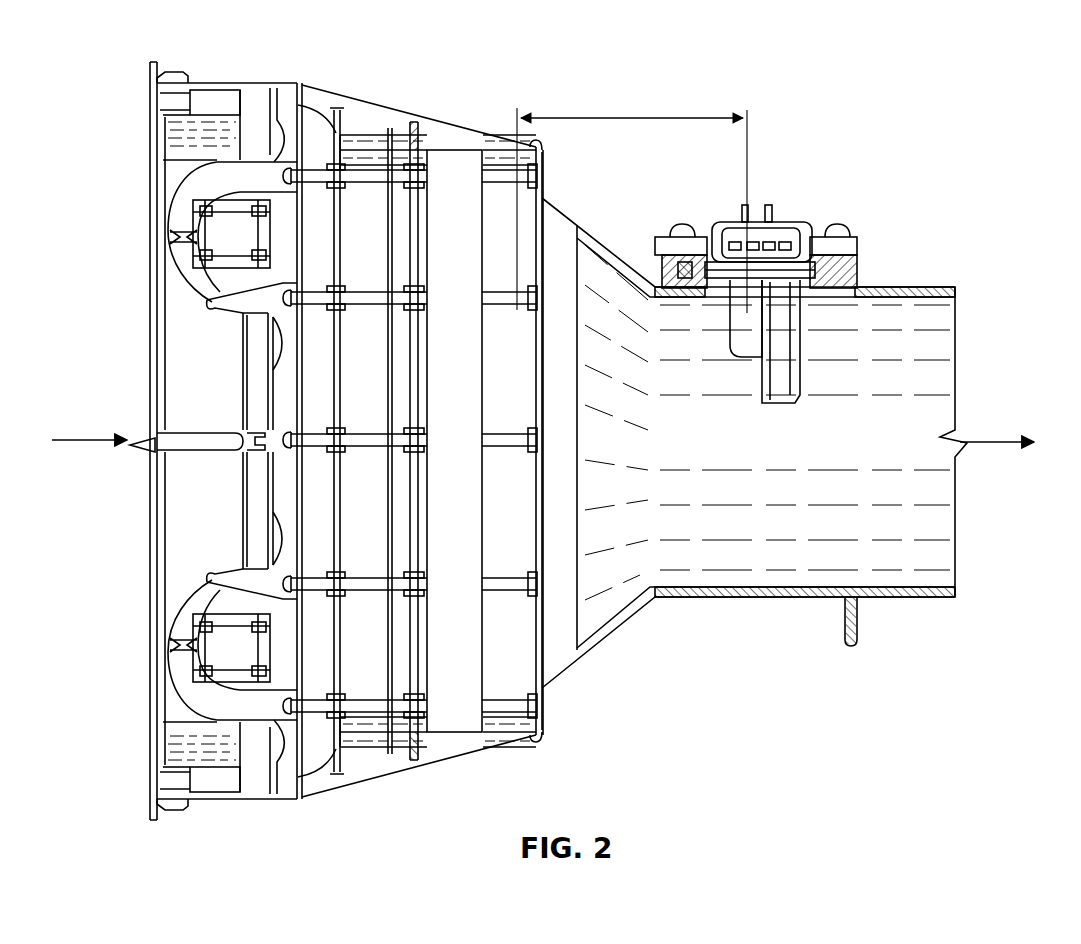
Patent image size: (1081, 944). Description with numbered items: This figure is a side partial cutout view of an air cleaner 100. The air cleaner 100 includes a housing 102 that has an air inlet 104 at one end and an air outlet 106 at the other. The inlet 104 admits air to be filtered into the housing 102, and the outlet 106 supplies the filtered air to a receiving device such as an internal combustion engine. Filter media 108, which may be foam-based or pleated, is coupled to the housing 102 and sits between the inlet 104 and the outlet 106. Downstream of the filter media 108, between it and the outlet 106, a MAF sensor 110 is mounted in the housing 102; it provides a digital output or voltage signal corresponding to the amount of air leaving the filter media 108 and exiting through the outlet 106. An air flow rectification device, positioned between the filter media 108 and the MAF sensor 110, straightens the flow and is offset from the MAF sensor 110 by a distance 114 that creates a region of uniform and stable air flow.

The air cleaner 100 is at (1000, 59).
The housing 102 is at (316, 91).
The air inlet 104 is at (88, 439).
The air outlet 106 is at (997, 440).
The filter media 108 is at (455, 165).
The MAF sensor 110 is at (790, 313).
The distance 114 is at (634, 116).